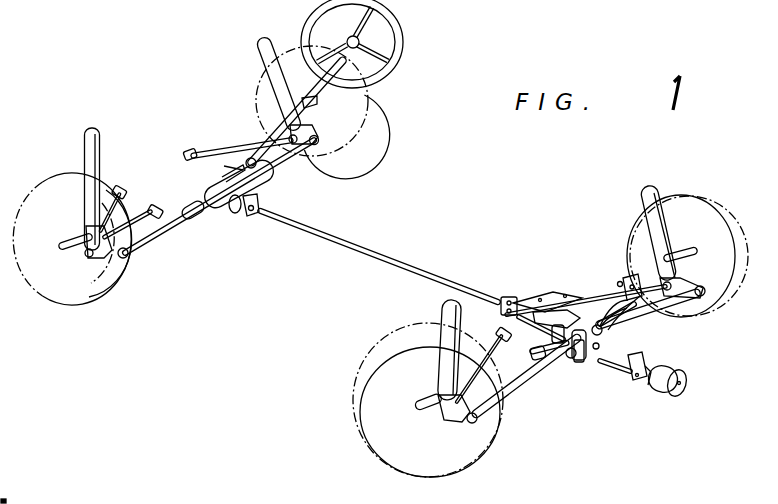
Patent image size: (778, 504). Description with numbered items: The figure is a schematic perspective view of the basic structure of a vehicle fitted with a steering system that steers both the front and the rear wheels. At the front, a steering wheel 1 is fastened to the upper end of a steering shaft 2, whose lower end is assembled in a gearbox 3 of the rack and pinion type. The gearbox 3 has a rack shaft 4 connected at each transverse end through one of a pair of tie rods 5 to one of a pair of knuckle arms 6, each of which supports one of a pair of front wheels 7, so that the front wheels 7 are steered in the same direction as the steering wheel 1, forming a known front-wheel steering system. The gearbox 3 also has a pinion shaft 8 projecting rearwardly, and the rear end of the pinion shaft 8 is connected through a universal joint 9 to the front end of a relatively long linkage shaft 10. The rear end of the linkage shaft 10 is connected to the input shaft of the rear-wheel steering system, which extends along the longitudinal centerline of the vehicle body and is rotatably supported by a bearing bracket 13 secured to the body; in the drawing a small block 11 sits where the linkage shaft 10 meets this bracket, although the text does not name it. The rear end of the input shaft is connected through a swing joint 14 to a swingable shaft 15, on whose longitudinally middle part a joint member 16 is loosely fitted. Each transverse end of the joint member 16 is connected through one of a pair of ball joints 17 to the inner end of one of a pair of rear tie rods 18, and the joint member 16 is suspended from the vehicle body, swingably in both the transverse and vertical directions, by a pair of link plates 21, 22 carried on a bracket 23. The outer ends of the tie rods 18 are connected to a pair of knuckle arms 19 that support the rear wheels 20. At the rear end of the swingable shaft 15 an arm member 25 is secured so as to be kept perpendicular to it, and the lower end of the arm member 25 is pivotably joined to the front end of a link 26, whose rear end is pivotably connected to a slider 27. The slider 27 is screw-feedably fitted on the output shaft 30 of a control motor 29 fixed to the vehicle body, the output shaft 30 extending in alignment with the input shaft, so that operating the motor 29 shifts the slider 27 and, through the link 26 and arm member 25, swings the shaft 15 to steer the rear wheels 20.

The steering wheel 1 is at (403, 40).
The steering shaft 2 is at (362, 89).
The gearbox 3 is at (271, 189).
The rack shaft 4 is at (186, 222).
The tie rods 5 is at (277, 169).
The knuckle arms 6 is at (345, 140).
The front wheels 7 is at (370, 128).
The pinion shaft 8 is at (237, 214).
The universal joint 9 is at (257, 229).
The linkage shaft 10 is at (370, 246).
The bearing block 11 is at (515, 289).
The bearing bracket 13 is at (548, 296).
The swing joint 14 is at (582, 294).
The swingable shaft 15 is at (577, 363).
The joint member 16 is at (580, 323).
The ball joints 17 is at (615, 329).
The tie rods 18 is at (687, 297).
The knuckle arms 19 is at (697, 287).
The rear wheels 20 is at (692, 190).
The link plate 21 is at (570, 372).
The link plate 22 is at (620, 281).
The bracket 23 is at (627, 273).
The arm member 25 is at (600, 345).
The link 26 is at (621, 373).
The slider 27 is at (645, 354).
The control motor 29 is at (666, 394).
The output shaft 30 is at (650, 393).